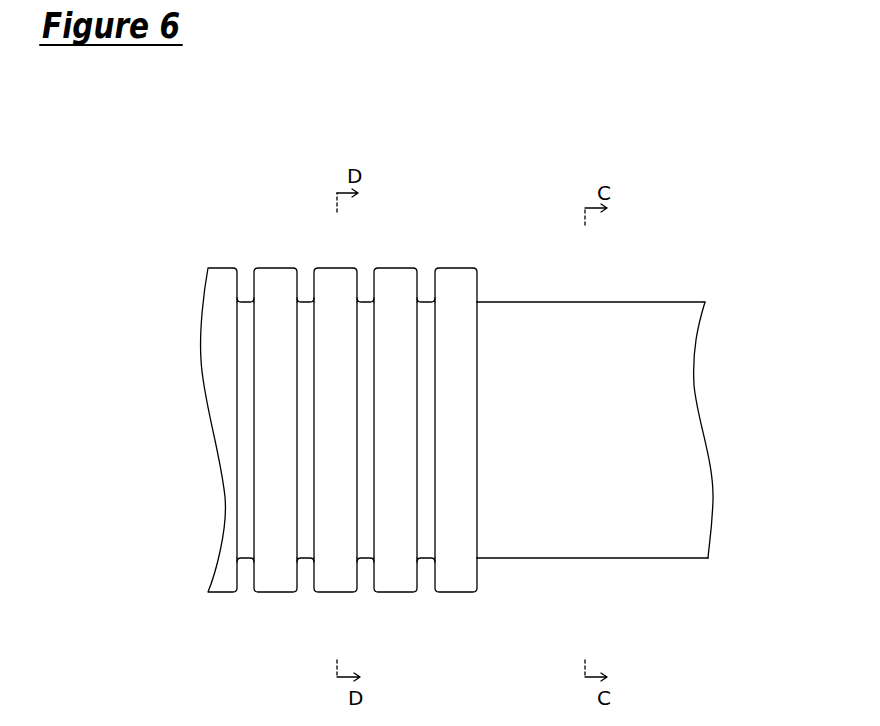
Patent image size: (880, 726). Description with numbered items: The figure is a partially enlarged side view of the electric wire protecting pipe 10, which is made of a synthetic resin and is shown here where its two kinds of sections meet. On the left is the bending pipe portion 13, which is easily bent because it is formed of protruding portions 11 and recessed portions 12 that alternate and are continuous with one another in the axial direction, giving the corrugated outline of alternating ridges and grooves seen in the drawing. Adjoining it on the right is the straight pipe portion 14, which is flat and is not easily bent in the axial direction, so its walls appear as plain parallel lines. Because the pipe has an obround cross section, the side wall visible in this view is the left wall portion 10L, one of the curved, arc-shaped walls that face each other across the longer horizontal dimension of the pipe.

The electric wire protecting pipe 10 is at (468, 103).
The protruding portions 11 is at (335, 580).
The recessed portions 12 is at (427, 318).
The bending pipe portion 13 is at (279, 303).
The straight pipe portion 14 is at (527, 320).
The left wall portion 10L is at (650, 338).